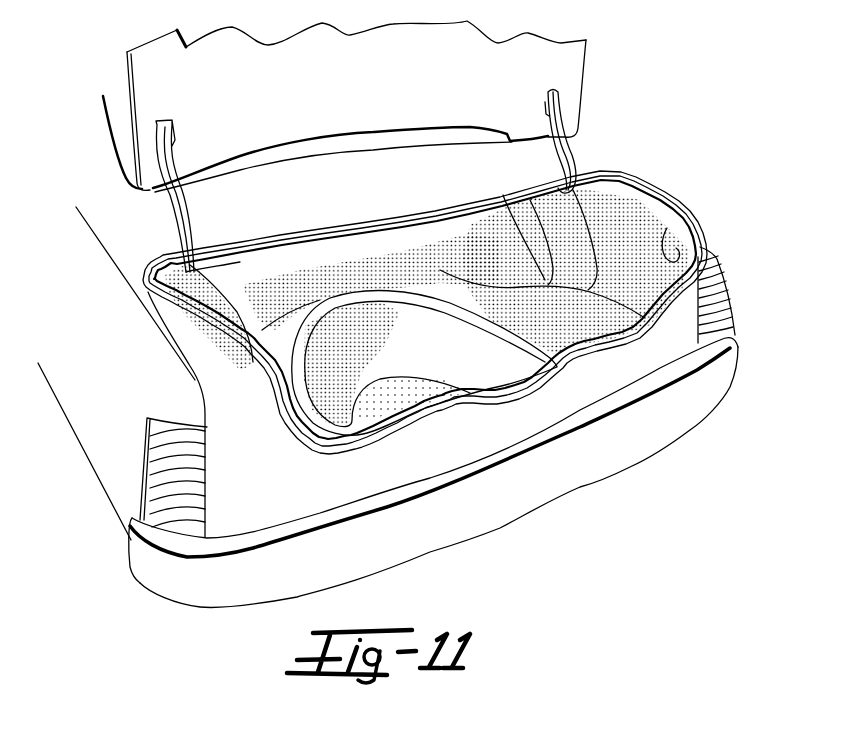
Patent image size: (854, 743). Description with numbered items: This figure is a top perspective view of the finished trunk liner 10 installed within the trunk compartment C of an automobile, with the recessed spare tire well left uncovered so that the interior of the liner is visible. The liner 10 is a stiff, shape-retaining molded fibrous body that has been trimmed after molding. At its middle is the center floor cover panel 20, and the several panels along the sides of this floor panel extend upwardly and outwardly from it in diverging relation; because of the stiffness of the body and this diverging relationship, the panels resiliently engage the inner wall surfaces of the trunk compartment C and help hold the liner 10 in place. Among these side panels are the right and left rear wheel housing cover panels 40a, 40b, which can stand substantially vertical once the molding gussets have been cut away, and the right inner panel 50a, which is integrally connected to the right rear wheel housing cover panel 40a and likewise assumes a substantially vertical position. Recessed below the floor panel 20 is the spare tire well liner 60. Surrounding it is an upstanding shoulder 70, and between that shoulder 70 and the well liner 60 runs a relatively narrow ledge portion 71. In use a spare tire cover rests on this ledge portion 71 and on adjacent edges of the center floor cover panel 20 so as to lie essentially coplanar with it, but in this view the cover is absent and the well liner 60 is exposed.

The trunk liner 10 is at (680, 168).
The center floor cover panel 20 is at (265, 298).
The right rear wheel housing cover panel 40a is at (470, 218).
The left rear wheel housing cover panel 40b is at (194, 303).
The right inner panel 50a is at (632, 220).
The spare tire well liner 60 is at (482, 369).
The upstanding shoulder 70 is at (383, 286).
The ledge portion 71 is at (323, 306).
The trunk compartment C is at (667, 228).